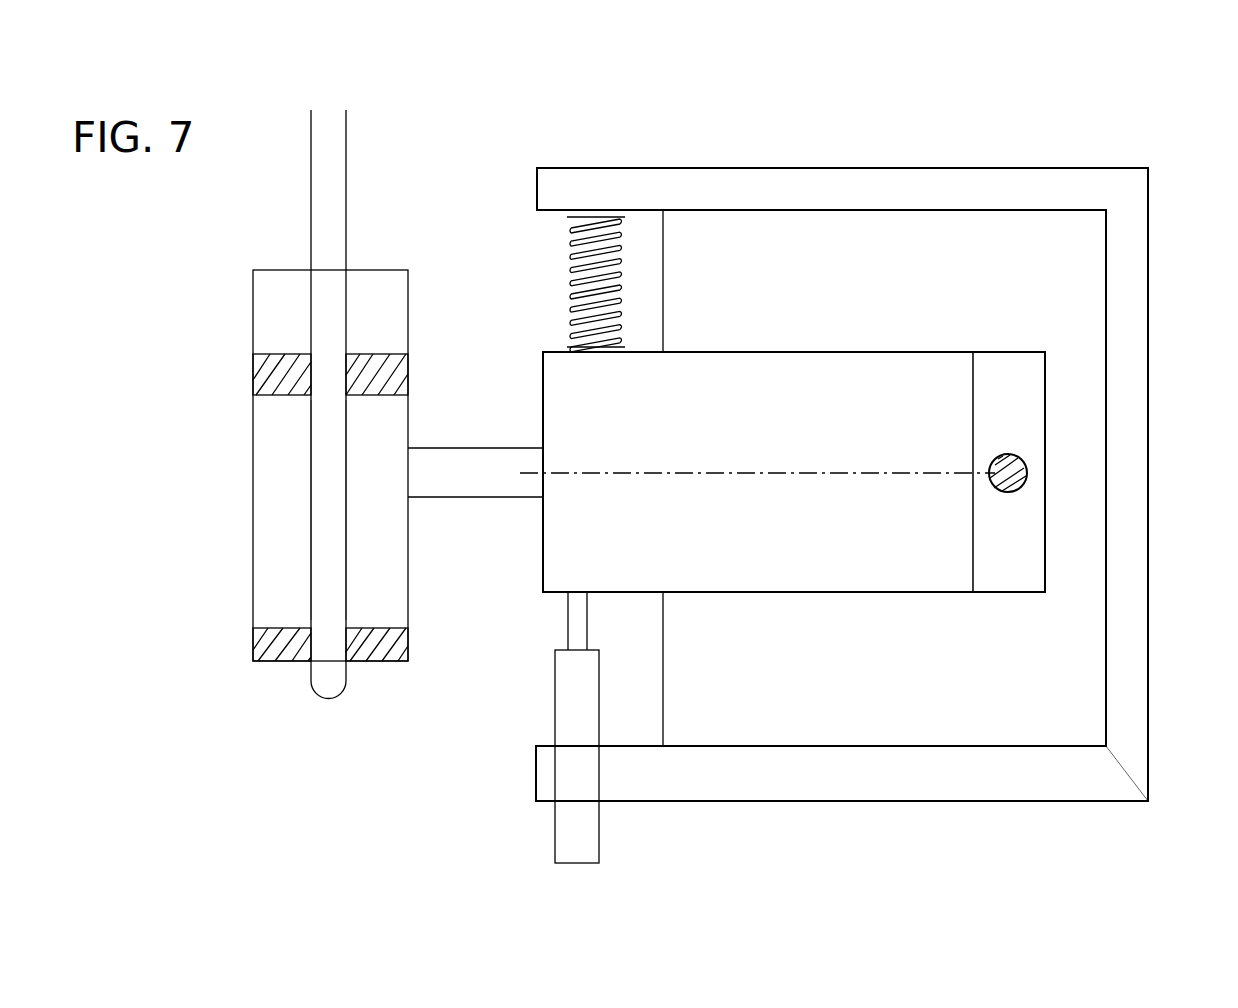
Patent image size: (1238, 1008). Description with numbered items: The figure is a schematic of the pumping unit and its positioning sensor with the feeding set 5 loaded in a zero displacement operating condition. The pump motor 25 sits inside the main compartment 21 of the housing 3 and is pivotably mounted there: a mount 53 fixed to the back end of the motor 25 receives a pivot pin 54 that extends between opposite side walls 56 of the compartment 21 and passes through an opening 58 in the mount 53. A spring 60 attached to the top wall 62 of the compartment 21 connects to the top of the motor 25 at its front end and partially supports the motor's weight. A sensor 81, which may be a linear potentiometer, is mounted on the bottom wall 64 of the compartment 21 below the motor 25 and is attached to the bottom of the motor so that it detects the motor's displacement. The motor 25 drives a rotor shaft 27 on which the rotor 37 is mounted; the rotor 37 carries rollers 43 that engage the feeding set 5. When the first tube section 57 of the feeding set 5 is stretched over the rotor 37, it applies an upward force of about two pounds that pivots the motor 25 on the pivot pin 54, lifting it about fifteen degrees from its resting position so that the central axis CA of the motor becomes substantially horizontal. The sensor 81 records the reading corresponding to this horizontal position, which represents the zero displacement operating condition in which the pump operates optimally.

The housing 3 is at (726, 188).
The side walls 56 is at (853, 252).
The main compartment 21 is at (984, 268).
The top wall 62 is at (1080, 192).
The bottom wall 64 is at (818, 778).
The spring 60 is at (567, 308).
The pump motor 25 is at (788, 375).
The mount 53 is at (1005, 400).
The pivot pin 54 is at (1022, 453).
The opening 58 is at (1025, 478).
The central axis CA is at (865, 473).
The rotor shaft 27 is at (472, 452).
The rotor 37 is at (175, 543).
The feeding set 5 is at (310, 480).
The first tube section 57 is at (326, 575).
The rollers 43 is at (255, 380).
The sensor 81 is at (572, 712).